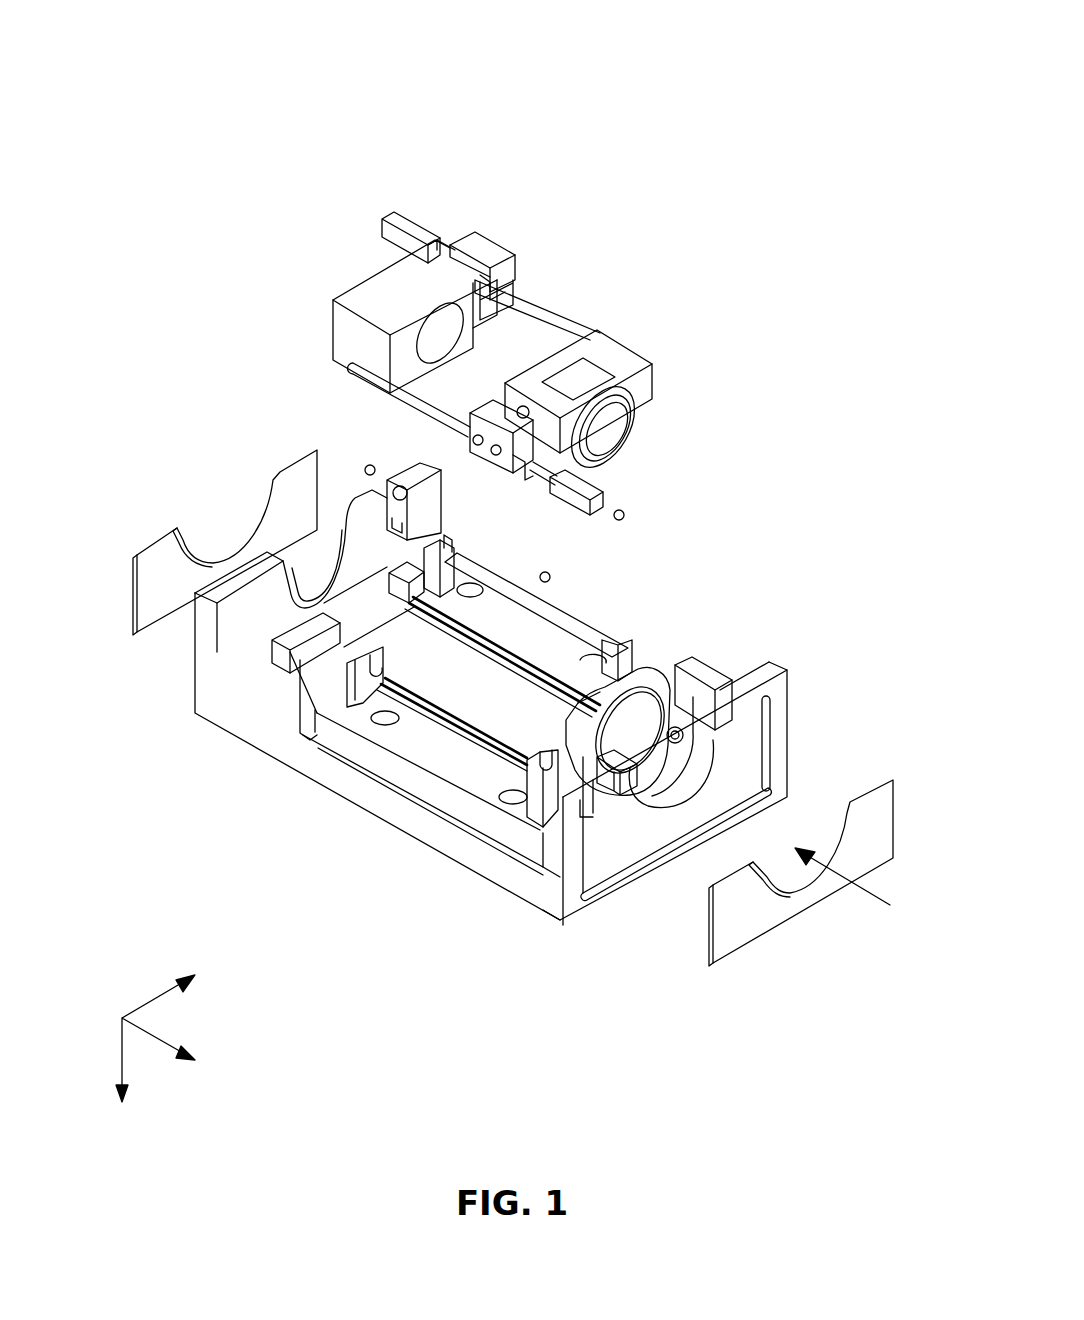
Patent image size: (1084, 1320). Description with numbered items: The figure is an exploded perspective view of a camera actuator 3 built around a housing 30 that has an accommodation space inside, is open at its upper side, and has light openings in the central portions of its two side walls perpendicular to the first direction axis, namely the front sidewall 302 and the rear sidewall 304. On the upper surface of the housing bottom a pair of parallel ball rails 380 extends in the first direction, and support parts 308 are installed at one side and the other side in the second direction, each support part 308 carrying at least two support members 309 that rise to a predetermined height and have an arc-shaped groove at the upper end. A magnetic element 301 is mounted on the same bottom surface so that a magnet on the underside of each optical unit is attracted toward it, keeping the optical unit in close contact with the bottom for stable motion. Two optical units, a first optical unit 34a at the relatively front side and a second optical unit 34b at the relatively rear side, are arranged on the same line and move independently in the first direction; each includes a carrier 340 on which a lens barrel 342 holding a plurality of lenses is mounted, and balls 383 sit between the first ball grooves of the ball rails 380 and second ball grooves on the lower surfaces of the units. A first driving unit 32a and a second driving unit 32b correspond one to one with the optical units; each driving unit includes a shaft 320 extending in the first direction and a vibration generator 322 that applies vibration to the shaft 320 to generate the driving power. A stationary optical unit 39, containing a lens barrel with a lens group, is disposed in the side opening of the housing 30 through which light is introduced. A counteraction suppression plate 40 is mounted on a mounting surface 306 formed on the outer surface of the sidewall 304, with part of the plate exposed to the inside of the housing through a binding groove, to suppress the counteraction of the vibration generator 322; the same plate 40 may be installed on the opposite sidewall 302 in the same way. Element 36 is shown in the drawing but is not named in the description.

The camera actuator 3 is at (504, 51).
The housing 30 is at (250, 720).
The magnetic element 301 is at (337, 738).
The front sidewall 302 is at (528, 843).
The rear sidewall 304 is at (207, 613).
The mounting surface 306 is at (605, 862).
The support part 308 is at (255, 712).
The support member 309 is at (473, 545).
The first driving unit 32a is at (742, 443).
The second driving unit 32b is at (482, 137).
The shaft 320 is at (437, 240).
The vibration generator 322 is at (413, 220).
The first optical unit 34a is at (738, 320).
The second optical unit 34b is at (232, 250).
The carrier 340 is at (378, 288).
The lens barrel 342 is at (433, 345).
The slider block 36 is at (485, 247).
The ball rail 380 is at (462, 698).
The ball 383 is at (366, 465).
The stationary optical unit 39 is at (640, 690).
The counteraction suppression plate 40 is at (150, 583).